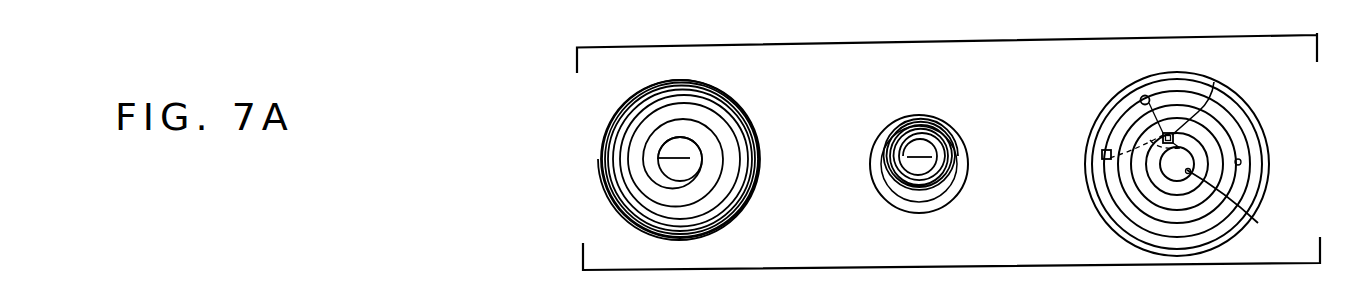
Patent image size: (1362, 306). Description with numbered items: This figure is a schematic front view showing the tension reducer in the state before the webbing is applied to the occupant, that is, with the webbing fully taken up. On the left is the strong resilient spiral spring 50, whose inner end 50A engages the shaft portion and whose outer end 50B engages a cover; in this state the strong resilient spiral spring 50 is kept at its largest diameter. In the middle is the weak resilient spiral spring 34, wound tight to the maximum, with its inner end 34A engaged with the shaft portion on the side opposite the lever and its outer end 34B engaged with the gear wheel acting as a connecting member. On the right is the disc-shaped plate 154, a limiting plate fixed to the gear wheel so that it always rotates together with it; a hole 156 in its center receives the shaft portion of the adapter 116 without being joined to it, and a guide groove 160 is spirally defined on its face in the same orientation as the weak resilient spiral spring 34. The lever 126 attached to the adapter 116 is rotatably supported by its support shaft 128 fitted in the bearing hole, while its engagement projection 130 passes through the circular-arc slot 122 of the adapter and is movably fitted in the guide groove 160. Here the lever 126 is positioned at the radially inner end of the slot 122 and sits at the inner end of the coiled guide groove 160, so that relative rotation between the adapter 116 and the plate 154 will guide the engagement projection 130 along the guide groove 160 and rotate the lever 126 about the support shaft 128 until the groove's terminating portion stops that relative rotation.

The strong resilient spiral spring 50 is at (610, 116).
The inner end of strong resilient spiral spring 50A is at (678, 158).
The outer end of strong resilient spiral spring 50B is at (734, 96).
The weak resilient spiral spring 34 is at (958, 125).
The inner end of weak resilient spiral spring 34A is at (921, 155).
The outer end of weak resilient spiral spring 34B is at (869, 132).
The plate 154 is at (1259, 112).
The guide groove 160 is at (1241, 162).
The hole 156 is at (1258, 223).
The adapter 116 is at (1103, 210).
The slot 122 is at (1163, 133).
The engagement projection 130 is at (1214, 82).
The lever 126 is at (1137, 138).
The support shaft 128 is at (1103, 154).